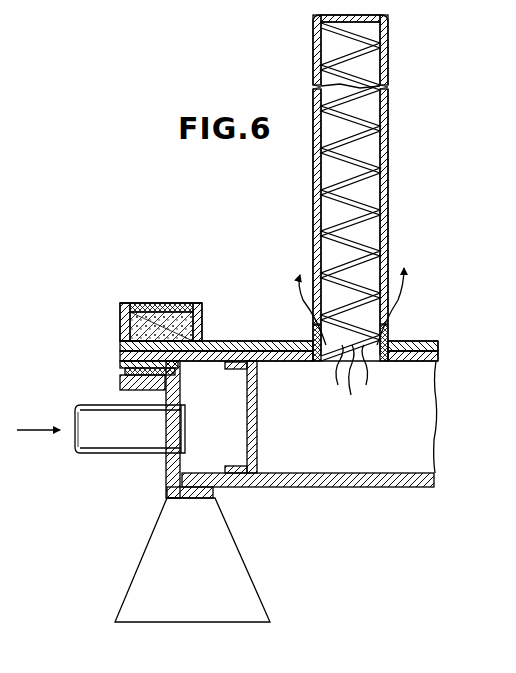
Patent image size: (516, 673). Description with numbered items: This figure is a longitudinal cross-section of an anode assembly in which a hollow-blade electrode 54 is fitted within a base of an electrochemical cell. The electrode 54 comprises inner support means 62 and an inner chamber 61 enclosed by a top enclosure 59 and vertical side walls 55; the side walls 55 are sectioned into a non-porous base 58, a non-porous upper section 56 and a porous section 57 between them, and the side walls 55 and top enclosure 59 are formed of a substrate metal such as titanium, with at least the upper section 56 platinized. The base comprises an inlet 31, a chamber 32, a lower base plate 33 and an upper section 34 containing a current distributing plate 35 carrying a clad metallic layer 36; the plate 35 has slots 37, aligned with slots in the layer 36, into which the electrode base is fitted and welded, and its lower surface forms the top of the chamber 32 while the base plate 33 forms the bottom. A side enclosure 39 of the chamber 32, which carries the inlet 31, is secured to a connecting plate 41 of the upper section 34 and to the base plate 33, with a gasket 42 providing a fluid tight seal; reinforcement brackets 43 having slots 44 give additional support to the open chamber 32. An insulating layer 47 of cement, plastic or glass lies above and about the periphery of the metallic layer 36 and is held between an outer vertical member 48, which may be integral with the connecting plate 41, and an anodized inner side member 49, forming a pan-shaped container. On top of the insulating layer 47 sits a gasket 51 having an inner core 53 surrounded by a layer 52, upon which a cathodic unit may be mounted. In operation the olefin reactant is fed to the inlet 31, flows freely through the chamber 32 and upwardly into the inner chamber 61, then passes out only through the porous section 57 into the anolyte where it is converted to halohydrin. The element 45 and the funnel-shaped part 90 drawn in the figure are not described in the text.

The inlet 31 is at (112, 446).
The chamber 32 is at (325, 437).
The lower base plate 33 is at (335, 488).
The upper section 34 is at (441, 344).
The current distributing plate 35 is at (430, 364).
The metallic layer 36 is at (424, 340).
The slots 37 is at (352, 378).
The side enclosure 39 is at (167, 477).
The connecting plate 41 is at (122, 369).
The gasket 42 is at (172, 372).
The reinforcement brackets 43 is at (256, 426).
The slots 44 is at (248, 411).
The mounting block 45 is at (157, 397).
The insulating layer 47 is at (140, 330).
The outer vertical member 48 is at (123, 328).
The inner side member 49 is at (203, 326).
The gasket 51 is at (147, 320).
The layer 52 is at (152, 302).
The inner core 53 is at (164, 307).
The electrode 54 is at (312, 183).
The vertical side walls 55 is at (312, 212).
The non-porous upper section 56 is at (386, 193).
The porous section 57 is at (312, 334).
The non-porous base 58 is at (350, 367).
The top enclosure 59 is at (368, 30).
The inner chamber 61 is at (375, 196).
The inner support means 62 is at (366, 156).
The funnel 90 is at (138, 572).